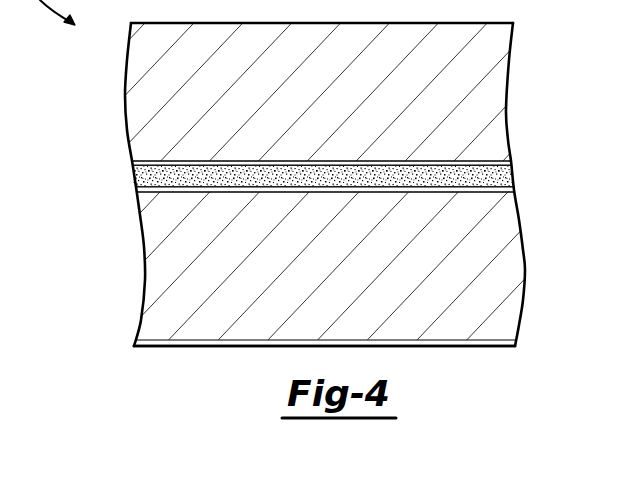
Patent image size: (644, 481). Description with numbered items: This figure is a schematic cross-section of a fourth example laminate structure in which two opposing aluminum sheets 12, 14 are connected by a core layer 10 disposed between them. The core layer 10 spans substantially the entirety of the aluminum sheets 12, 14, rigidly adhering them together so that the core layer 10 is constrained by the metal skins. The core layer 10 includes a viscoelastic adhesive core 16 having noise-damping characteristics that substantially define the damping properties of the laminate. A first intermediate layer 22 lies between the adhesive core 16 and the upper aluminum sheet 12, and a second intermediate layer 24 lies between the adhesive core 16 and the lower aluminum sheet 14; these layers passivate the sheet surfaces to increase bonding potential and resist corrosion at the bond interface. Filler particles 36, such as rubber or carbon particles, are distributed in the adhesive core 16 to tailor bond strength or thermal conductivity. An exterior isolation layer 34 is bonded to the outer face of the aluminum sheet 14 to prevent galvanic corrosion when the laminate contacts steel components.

The core layer 10 is at (92, 173).
The aluminum sheet 12 is at (125, 97).
The aluminum sheet 14 is at (143, 260).
The adhesive core 16 is at (515, 177).
The first intermediate layer 22 is at (513, 162).
The second intermediate layer 24 is at (515, 189).
The isolation layer 34 is at (515, 345).
The filler particles 36 is at (133, 170).